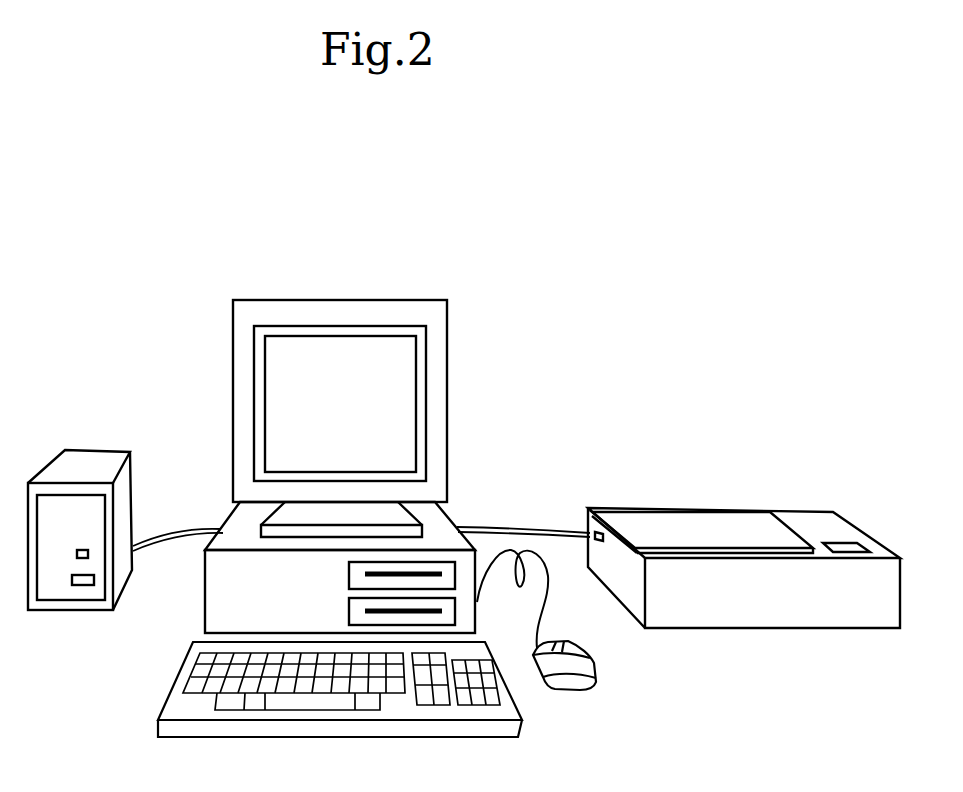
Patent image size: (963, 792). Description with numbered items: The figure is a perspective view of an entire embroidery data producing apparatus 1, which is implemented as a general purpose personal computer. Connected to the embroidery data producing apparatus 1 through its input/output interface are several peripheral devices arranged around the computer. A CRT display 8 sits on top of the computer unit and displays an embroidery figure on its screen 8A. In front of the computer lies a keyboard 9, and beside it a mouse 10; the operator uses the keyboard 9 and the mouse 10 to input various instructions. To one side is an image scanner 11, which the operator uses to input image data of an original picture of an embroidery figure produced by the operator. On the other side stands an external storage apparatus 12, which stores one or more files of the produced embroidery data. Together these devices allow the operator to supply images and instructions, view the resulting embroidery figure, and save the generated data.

The embroidery data producing apparatus 1 is at (448, 517).
The CRT display 8 is at (408, 300).
The screen 8A is at (416, 357).
The keyboard 9 is at (502, 730).
The mouse 10 is at (595, 665).
The image scanner 11 is at (810, 525).
The external storage apparatus 12 is at (87, 460).